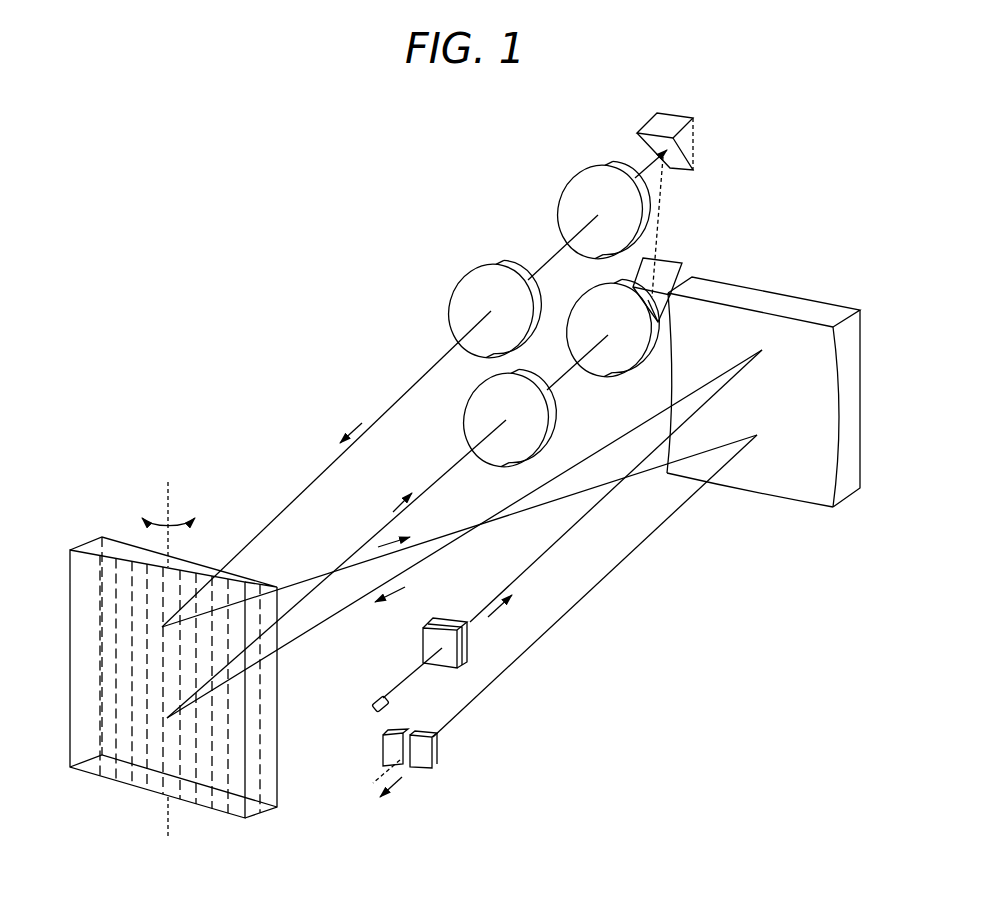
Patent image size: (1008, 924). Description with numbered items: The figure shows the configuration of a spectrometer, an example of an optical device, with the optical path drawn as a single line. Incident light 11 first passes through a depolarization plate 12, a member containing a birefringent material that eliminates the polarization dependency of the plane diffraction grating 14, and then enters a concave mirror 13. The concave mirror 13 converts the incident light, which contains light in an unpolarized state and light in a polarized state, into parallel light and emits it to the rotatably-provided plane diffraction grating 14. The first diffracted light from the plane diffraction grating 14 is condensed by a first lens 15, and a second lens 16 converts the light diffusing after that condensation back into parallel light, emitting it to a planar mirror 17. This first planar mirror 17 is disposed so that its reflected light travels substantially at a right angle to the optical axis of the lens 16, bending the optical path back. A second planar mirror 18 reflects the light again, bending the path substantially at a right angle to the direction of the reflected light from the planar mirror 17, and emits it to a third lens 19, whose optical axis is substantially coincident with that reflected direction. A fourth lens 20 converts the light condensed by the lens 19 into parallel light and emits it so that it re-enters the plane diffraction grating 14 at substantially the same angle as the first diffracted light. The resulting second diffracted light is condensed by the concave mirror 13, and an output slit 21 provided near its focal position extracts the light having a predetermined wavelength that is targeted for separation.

The incident light 11 is at (377, 698).
The depolarization plate 12 is at (422, 642).
The concave mirror 13 is at (818, 308).
The plane diffraction grating 14 is at (97, 548).
The first lens 15 is at (475, 407).
The second lens 16 is at (586, 304).
The first planar mirror 17 is at (670, 272).
The second planar mirror 18 is at (675, 117).
The third lens 19 is at (567, 197).
The fourth lens 20 is at (467, 303).
The output slit 21 is at (422, 753).